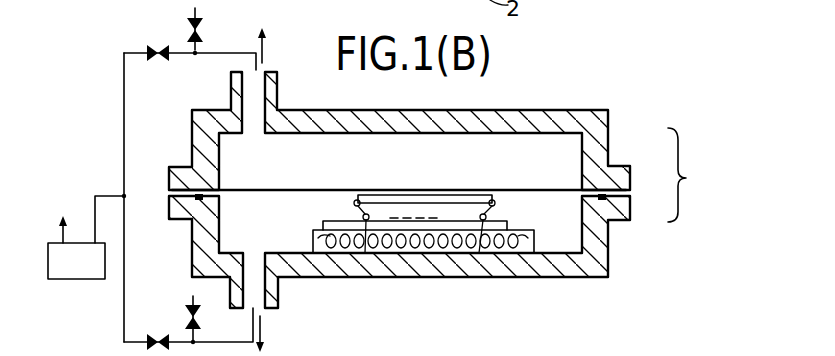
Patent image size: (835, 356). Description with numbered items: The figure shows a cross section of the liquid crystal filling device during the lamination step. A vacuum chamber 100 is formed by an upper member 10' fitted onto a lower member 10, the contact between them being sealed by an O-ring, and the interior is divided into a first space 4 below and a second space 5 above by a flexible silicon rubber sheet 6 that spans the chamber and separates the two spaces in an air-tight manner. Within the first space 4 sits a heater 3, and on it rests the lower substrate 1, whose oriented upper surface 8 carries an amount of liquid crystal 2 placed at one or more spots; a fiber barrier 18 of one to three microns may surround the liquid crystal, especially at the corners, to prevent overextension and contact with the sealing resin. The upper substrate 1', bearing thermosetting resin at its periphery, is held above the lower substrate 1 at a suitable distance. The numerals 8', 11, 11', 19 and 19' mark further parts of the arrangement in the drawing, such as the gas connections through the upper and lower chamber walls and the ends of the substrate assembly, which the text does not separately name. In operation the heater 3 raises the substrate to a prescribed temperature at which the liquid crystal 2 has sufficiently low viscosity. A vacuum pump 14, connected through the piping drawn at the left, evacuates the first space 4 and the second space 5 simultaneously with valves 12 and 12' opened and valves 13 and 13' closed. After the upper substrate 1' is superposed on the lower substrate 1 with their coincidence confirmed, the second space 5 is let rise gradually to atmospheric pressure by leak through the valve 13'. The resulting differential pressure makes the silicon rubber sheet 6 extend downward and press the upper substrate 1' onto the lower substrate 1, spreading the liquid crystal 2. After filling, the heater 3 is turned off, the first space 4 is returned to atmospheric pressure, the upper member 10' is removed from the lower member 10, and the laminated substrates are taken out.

The lower substrate 1 is at (423, 287).
The upper substrate 1' is at (425, 261).
The liquid crystal 2 is at (408, 224).
The heater 3 is at (507, 245).
The first space 4 is at (563, 258).
The second space 5 is at (562, 150).
The silicon rubber sheet 6 is at (520, 190).
The upper surface 8 is at (425, 266).
The thermocouple 8' is at (415, 272).
The lower member 10 is at (430, 208).
The upper member 10' is at (627, 165).
The vacuum chamber 100 is at (731, 191).
The gas outlet 11 is at (217, 330).
The gas inlet 11' is at (222, 49).
The valve 12 is at (151, 321).
The valve 12' is at (148, 30).
The valve 13 is at (217, 320).
The valve 13' is at (223, 28).
The vacuum pump 14 is at (78, 280).
The fiber barrier 18 is at (363, 209).
The thermocouple junction 19 is at (499, 175).
The thermocouple junction 19' is at (344, 175).